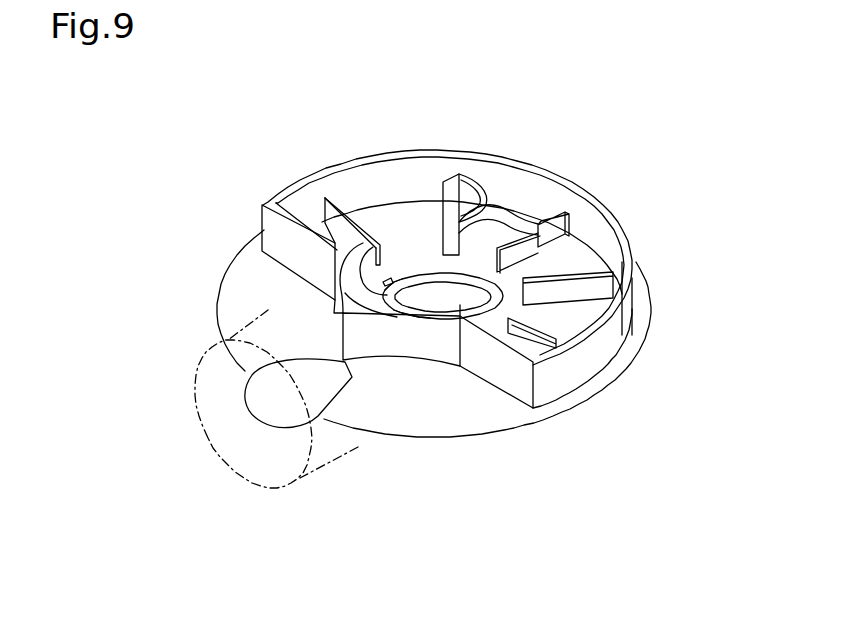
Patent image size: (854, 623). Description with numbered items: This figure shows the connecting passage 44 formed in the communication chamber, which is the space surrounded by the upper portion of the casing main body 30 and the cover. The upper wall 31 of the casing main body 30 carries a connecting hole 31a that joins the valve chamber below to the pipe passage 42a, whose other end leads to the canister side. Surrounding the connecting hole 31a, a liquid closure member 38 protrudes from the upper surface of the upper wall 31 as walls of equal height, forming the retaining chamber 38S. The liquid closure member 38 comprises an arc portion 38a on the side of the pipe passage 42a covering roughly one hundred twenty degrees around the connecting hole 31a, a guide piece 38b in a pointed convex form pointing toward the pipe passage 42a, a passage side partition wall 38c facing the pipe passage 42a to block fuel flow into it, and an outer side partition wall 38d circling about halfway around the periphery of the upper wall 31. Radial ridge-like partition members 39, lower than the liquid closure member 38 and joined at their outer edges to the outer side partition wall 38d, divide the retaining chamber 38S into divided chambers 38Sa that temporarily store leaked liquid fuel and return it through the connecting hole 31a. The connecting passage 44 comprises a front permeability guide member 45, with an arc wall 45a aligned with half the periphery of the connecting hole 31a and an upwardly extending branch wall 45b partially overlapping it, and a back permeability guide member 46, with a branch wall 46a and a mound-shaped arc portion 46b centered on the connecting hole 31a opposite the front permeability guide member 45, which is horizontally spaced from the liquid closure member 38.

The upper wall 31 is at (513, 408).
The connecting hole 31a is at (470, 302).
The casing main body 30 is at (641, 308).
The liquid closure member 38 is at (97, 156).
The arc portion 38a is at (342, 302).
The guide piece 38b is at (338, 334).
The passage side partition wall 38c is at (293, 240).
The outer side partition wall 38d is at (278, 195).
The retaining chamber 38S is at (418, 252).
The divided chamber 38Sa is at (590, 256).
The partition member 39 is at (548, 337).
The pipe passage 42a is at (283, 461).
The connecting passage 44 is at (393, 222).
The front permeability guide member 45 is at (438, 553).
The arc wall 45a is at (418, 306).
The branch wall 45b is at (385, 284).
The back permeability guide member 46 is at (645, 108).
The branch wall 46a is at (485, 218).
The arc portion 46b is at (527, 217).